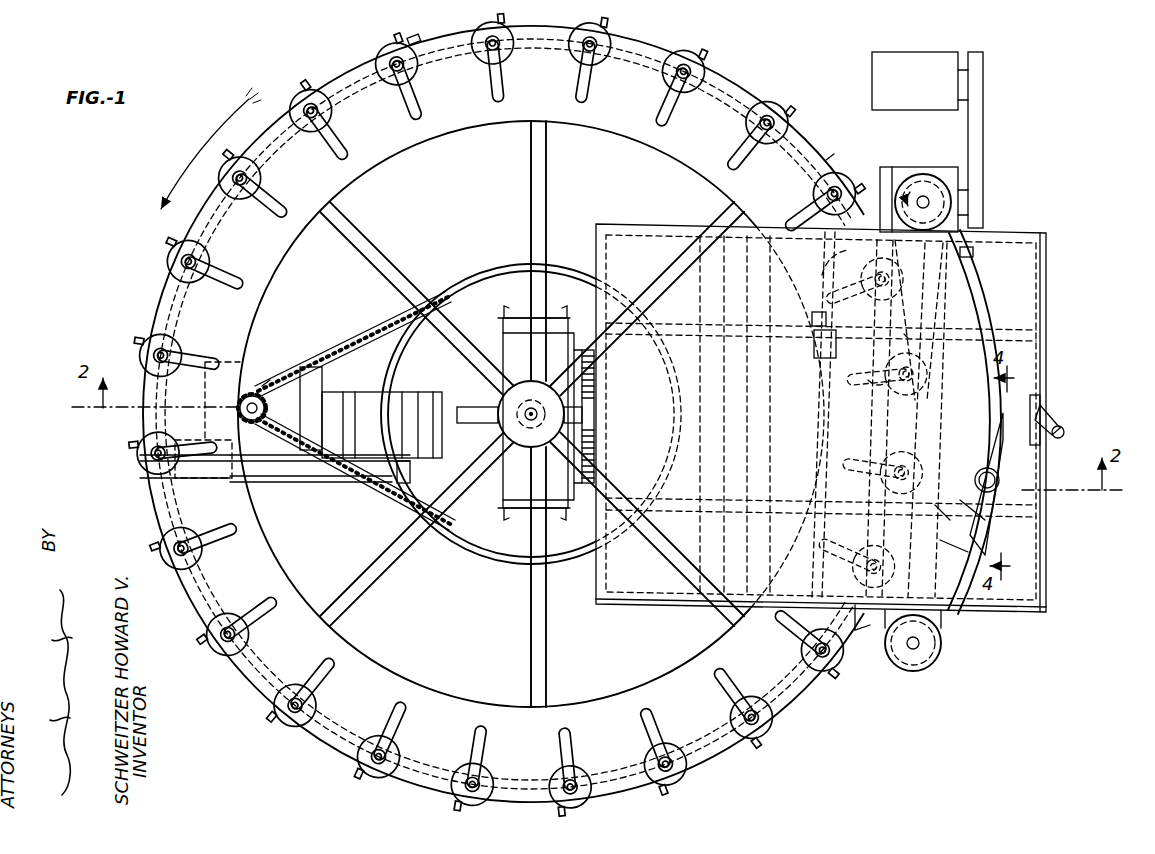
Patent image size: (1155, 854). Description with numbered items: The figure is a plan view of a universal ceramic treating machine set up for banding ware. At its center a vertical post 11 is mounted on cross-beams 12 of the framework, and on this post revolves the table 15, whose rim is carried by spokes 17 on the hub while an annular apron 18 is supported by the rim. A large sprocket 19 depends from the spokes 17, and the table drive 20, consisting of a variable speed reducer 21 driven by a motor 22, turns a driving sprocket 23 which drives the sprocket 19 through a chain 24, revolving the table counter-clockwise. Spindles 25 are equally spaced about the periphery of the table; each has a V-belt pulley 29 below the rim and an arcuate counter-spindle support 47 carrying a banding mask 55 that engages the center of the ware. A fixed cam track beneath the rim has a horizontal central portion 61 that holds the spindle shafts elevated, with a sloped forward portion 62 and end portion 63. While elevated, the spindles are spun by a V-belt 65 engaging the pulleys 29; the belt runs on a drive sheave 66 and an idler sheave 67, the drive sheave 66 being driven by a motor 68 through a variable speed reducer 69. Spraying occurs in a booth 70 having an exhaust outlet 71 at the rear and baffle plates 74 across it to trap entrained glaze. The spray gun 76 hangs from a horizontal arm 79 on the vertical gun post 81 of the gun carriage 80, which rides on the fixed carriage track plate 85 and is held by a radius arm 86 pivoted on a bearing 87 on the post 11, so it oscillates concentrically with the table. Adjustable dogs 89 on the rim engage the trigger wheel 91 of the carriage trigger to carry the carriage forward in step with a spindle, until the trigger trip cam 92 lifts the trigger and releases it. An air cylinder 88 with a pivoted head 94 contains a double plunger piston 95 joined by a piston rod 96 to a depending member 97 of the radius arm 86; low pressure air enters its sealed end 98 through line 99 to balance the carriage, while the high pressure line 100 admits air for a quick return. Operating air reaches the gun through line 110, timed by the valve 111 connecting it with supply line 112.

The vertical post 11 is at (505, 405).
The cross-beams 12 is at (507, 328).
The table 15 is at (245, 680).
The spokes 17 is at (547, 184).
The annular apron 18 is at (375, 668).
The large sprocket 19 is at (458, 556).
The table drive 20 is at (302, 484).
The variable speed reducer 21 is at (265, 385).
The motor 22 is at (393, 398).
The driving sprocket 23 is at (265, 411).
The chain 24 is at (366, 330).
The spindles 25 is at (252, 172).
The V-belt pulley 29 is at (903, 290).
The arcuate counter-spindle support 47 is at (418, 104).
The banding mask 55 is at (512, 60).
The central portion of cam track 61 is at (828, 155).
The forward portion of cam track 62 is at (808, 690).
The end portion of cam track 63 is at (436, 42).
The V-belt 65 is at (862, 628).
The drive sheave 66 is at (918, 176).
The idler sheave 67 is at (933, 662).
The motor 68 is at (872, 61).
The variable speed reducer 69 is at (970, 183).
The booth 70 is at (662, 222).
The exhaust outlet 71 is at (597, 375).
The baffle plates 74 is at (700, 542).
The spray gun 76 is at (940, 516).
The horizontal arm 79 is at (990, 512).
The gun carriage 80 is at (1000, 528).
The vertical gun post 81 is at (1000, 476).
The fixed carriage track plate 85 is at (1030, 294).
The radius arm 86 is at (726, 432).
The bearing 87 is at (574, 446).
The air cylinder 88 is at (812, 300).
The adjustable dogs 89 is at (313, 92).
The trigger wheel 91 is at (985, 432).
The trigger trip cam 92 is at (906, 332).
The cylinder head 94 is at (810, 212).
The double plunger piston 95 is at (812, 320).
The piston rod 96 is at (820, 396).
The depending member 97 is at (812, 505).
The sealed cylinder end 98 is at (814, 356).
The low pressure air line 99 is at (868, 380).
The high pressure line 100 is at (820, 274).
The operating air line 110 is at (1033, 400).
The gun valve 111 is at (1060, 424).
The supply line 112 is at (1063, 434).